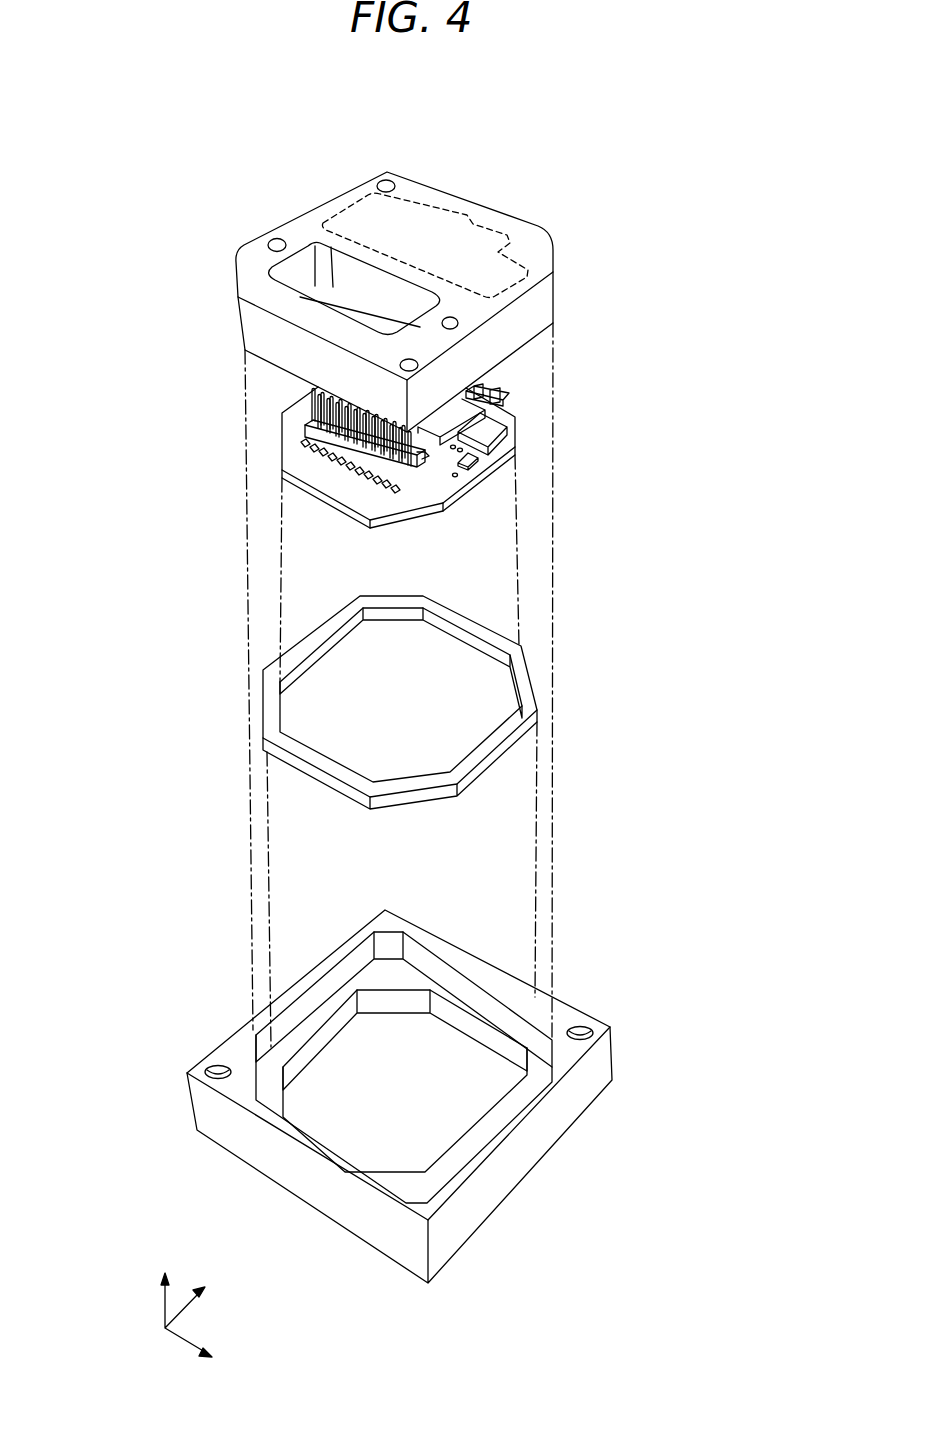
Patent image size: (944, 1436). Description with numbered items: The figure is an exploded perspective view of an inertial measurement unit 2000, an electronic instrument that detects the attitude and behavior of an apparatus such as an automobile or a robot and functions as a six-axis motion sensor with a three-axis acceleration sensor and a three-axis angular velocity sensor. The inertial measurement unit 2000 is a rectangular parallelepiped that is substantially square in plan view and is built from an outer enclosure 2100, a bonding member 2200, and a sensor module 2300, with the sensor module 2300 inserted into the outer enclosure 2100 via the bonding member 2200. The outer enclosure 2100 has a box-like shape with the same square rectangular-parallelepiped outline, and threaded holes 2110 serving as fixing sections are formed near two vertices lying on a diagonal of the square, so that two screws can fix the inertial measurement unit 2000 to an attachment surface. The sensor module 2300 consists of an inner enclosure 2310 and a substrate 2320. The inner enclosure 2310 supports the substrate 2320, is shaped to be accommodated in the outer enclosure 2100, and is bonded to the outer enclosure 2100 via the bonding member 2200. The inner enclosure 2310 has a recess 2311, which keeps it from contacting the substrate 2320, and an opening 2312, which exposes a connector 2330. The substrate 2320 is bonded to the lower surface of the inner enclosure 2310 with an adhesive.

The inertial measurement unit 2000 is at (607, 145).
The outer enclosure 2100 is at (500, 1183).
The threaded holes 2110 is at (218, 1066).
The bonding member 2200 is at (528, 704).
The sensor module 2300 is at (640, 238).
The inner enclosure 2310 is at (533, 252).
The recess 2311 is at (465, 222).
The opening 2312 is at (377, 282).
The substrate 2320 is at (517, 462).
The connector 2330 is at (415, 470).